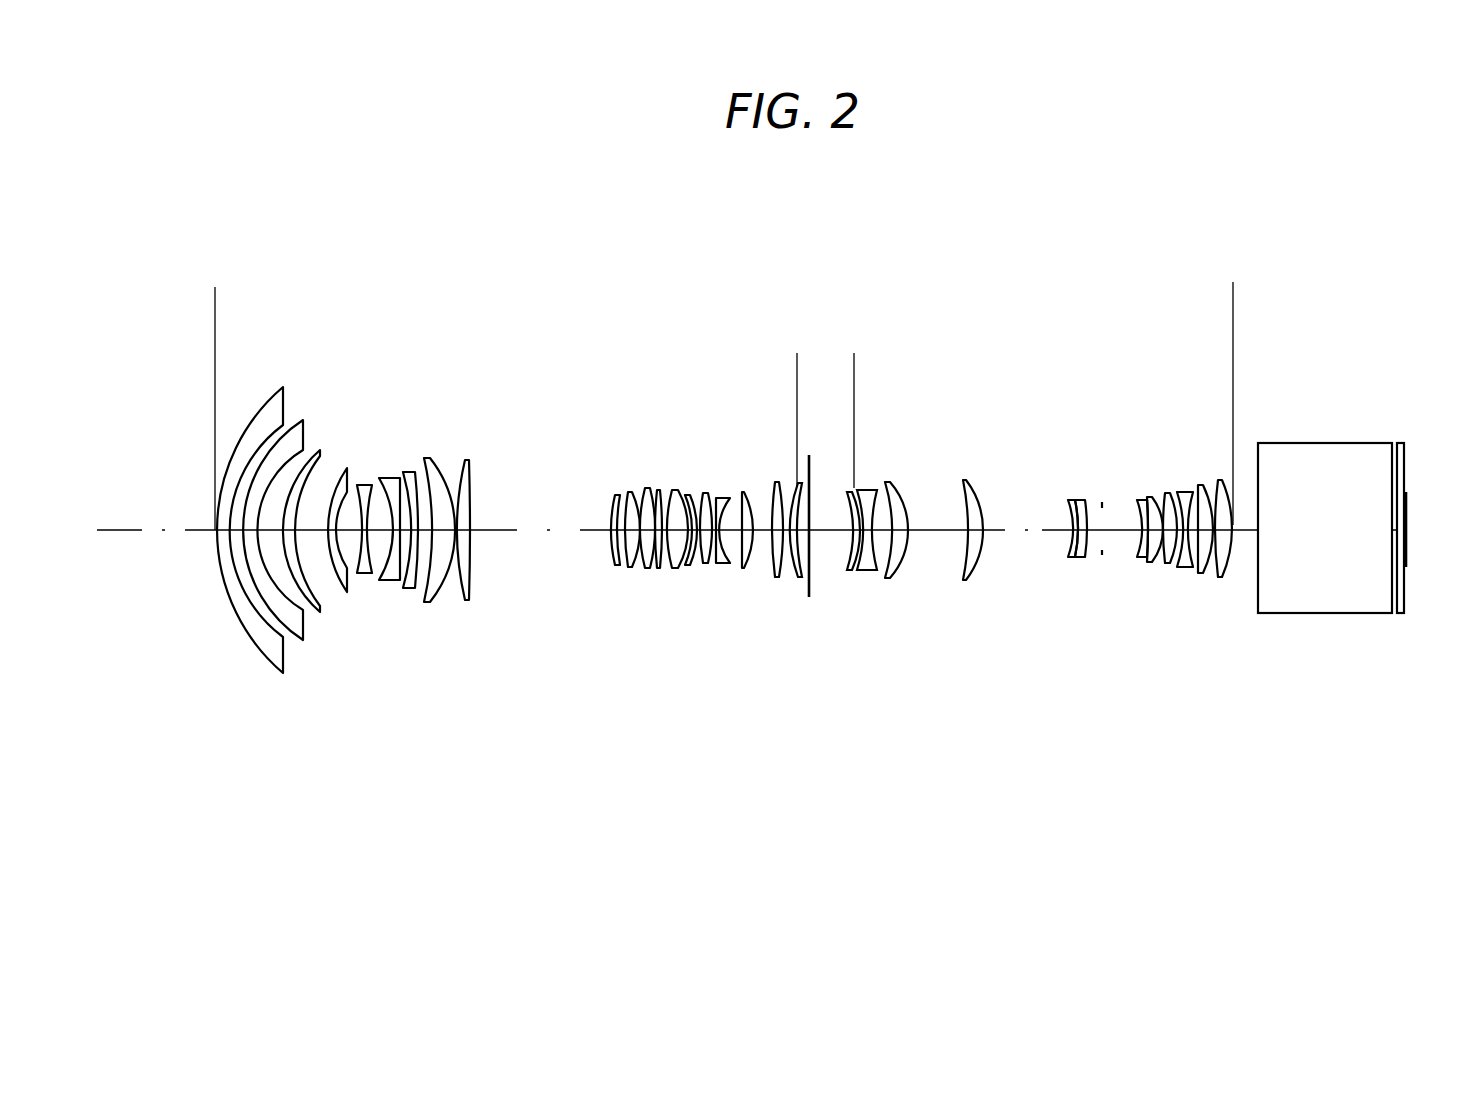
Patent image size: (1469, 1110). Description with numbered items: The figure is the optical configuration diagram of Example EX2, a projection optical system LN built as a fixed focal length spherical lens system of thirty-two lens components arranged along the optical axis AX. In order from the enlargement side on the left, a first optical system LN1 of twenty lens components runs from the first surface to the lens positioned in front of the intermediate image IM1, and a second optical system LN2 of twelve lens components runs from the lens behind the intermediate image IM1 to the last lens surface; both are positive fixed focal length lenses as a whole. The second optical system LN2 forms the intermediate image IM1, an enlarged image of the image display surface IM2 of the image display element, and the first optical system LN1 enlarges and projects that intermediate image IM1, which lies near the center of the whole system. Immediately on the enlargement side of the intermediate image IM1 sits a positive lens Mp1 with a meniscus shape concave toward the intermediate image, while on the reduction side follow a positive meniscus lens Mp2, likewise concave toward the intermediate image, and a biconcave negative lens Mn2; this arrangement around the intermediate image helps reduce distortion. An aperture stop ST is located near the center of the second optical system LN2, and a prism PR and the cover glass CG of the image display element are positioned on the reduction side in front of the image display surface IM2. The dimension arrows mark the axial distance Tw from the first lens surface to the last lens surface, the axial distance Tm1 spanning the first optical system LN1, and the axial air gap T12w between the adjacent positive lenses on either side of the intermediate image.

The Example 2 EX2 is at (775, 234).
The optical axis AX is at (115, 531).
The projection optical system LN is at (720, 615).
The first optical system LN1 is at (509, 567).
The second optical system LN2 is at (1033, 589).
The positive lens Mp1 is at (795, 574).
The positive lens Mp2 is at (848, 575).
The negative lens Mn2 is at (873, 575).
The intermediate image IM1 is at (809, 447).
The image display surface IM2 is at (1407, 490).
The aperture stop ST is at (1102, 497).
The prism PR is at (1340, 539).
The cover glass CG is at (1402, 619).
The axial distance Tw is at (1213, 310).
The axial distance Tm1 is at (777, 376).
The axial air-gap T12w is at (830, 362).